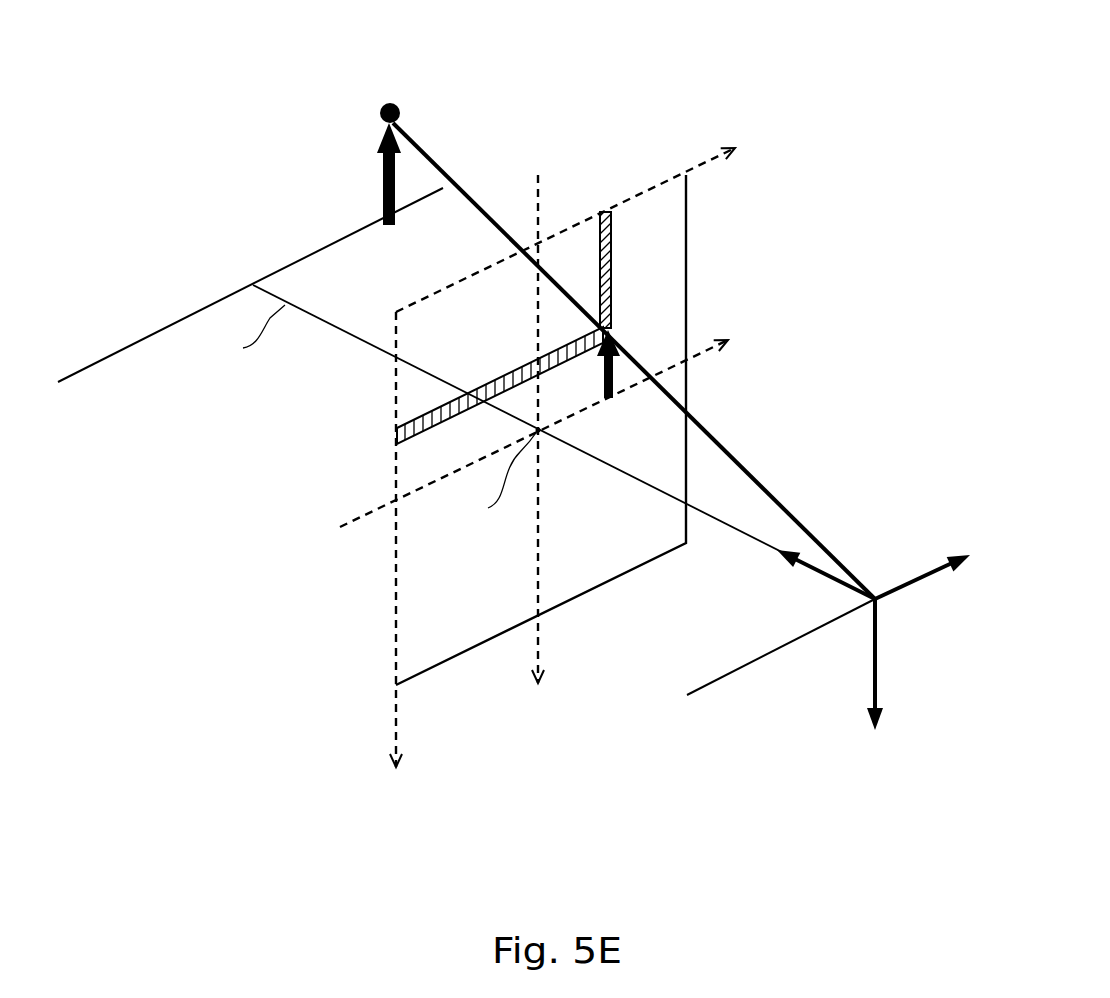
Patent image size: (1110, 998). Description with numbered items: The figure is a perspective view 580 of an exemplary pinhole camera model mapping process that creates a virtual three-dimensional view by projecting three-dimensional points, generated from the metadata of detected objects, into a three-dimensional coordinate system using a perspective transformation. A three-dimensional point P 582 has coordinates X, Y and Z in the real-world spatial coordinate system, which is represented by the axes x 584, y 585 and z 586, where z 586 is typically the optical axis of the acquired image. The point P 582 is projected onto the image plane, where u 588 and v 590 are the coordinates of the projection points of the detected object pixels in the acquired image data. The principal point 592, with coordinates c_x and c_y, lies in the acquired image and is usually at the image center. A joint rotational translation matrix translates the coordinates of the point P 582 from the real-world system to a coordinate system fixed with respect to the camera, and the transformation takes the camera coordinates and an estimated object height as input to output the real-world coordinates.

The perspective view 580 is at (807, 48).
The three-dimensional point P 582 is at (380, 123).
The x axis 584 is at (726, 330).
The y axis 585 is at (540, 690).
The z axis 586 is at (355, 340).
The u coordinate 588 is at (690, 172).
The v coordinate 590 is at (396, 775).
The principal point 592 is at (538, 430).